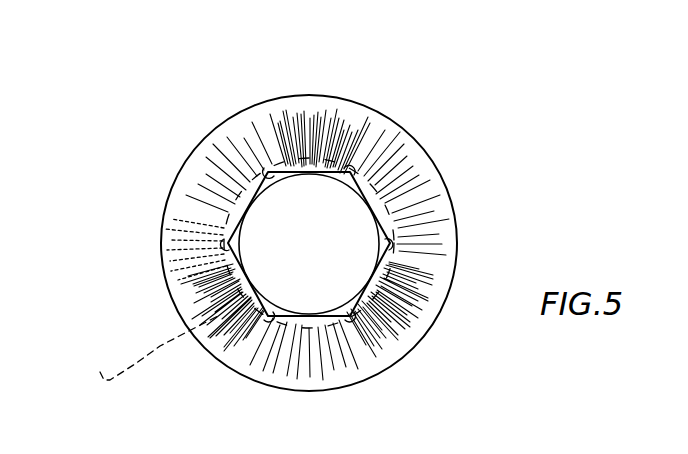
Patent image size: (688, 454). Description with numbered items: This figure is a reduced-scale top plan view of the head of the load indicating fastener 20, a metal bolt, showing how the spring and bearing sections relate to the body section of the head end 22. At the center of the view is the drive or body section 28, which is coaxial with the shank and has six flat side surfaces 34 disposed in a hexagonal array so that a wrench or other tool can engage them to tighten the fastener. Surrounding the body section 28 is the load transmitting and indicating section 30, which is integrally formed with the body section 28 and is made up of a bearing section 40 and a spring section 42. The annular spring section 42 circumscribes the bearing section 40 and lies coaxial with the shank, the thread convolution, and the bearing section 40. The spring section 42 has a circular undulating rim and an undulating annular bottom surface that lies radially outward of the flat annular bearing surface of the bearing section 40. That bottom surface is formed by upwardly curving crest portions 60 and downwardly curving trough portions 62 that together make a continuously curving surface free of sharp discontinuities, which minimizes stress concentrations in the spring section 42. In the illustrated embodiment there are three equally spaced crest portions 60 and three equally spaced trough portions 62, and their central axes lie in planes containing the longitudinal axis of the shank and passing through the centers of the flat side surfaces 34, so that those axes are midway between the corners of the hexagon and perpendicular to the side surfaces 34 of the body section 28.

The load indicating fastener 20 is at (194, 60).
The head end 22 is at (475, 148).
The body section 28 is at (210, 225).
The load transmitting and indicating section 30 is at (470, 213).
The flat side surfaces 34 is at (345, 176).
The bearing section 40 is at (160, 340).
The spring section 42 is at (230, 388).
The crest portions 60 is at (309, 93).
The trough portions 62 is at (186, 164).